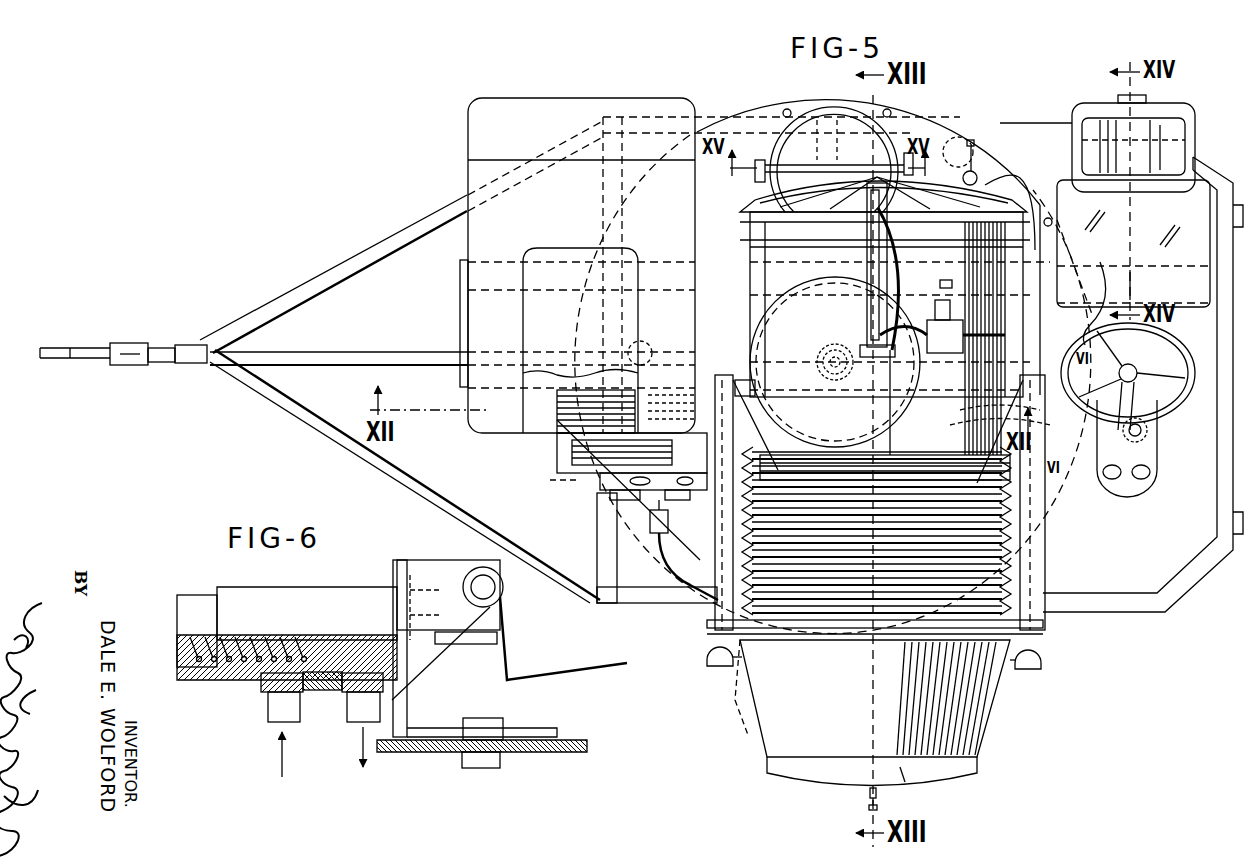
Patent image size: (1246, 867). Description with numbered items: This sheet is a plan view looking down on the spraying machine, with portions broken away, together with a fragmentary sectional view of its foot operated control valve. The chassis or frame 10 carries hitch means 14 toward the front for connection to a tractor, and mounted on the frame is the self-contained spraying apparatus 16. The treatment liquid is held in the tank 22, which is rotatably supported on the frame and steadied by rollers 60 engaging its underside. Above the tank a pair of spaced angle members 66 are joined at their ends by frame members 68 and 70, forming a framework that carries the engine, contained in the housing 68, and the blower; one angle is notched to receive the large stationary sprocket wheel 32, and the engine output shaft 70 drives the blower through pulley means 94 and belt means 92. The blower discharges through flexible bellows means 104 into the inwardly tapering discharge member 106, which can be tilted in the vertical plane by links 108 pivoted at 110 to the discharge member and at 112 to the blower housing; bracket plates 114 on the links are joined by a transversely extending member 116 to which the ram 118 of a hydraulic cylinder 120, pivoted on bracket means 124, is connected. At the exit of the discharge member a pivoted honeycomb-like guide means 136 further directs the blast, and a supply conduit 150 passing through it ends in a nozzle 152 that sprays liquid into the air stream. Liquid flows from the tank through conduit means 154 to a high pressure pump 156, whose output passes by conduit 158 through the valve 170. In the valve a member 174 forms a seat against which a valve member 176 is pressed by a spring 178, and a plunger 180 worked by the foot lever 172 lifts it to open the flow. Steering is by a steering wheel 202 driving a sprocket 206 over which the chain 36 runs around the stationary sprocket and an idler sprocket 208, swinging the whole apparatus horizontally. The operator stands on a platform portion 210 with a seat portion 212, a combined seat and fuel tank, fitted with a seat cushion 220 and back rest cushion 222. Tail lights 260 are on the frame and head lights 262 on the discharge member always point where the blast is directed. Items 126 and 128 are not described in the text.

In FIG. 5, the frame 10 is at (320, 280).
In FIG. 5, the hitch means 14 is at (148, 343).
In FIG. 5, the spraying apparatus 16 is at (1022, 195).
In FIG. 5, the tank 22 is at (930, 124).
In FIG. 5, the sprocket wheel 32 is at (760, 300).
In FIG. 5, the chain 36 is at (755, 340).
In FIG. 5, the rollers 60 is at (648, 345).
In FIG. 5, the angle members 66 is at (463, 275).
In FIG. 5, the housing 68 is at (465, 178).
In FIG. 5, the output shaft 70 is at (563, 388).
In FIG. 5, the belt means 92 is at (560, 420).
In FIG. 5, the pulley means 94 is at (560, 412).
In FIG. 5, the flexible bellows means 104 is at (1012, 580).
In FIG. 5, the discharge member 106 is at (990, 685).
In FIG. 5, the links 108 is at (720, 546).
In FIG. 5, the pivot 110 is at (707, 628).
In FIG. 5, the pivot 112 is at (745, 380).
In FIG. 5, the bracket plate 114 is at (1040, 458).
In FIG. 5, the transversely extending member 116 is at (1010, 495).
In FIG. 5, the ram 118 is at (875, 395).
In FIG. 5, the cylinder 120 is at (880, 230).
In FIG. 5, the bracket means 124 is at (865, 228).
In FIG. 5, the valve 126 is at (942, 342).
In FIG. 5, the fitting 128 is at (920, 300).
In FIG. 5, the honeycomb-like guide means 136 is at (900, 778).
In FIG. 5, the supply conduit 150 is at (868, 792).
In FIG. 6, the supply conduit 150 is at (352, 718).
In FIG. 5, the nozzle 152 is at (868, 807).
In FIG. 5, the conduit means 154 is at (680, 567).
In FIG. 5, the high pressure pump 156 is at (700, 500).
In FIG. 6, the conduit 158 is at (268, 714).
In FIG. 5, the valve 170 is at (1120, 500).
In FIG. 6, the valve 170 is at (360, 585).
In FIG. 6, the foot lever 172 is at (572, 670).
In FIG. 6, the valve seat member 174 is at (330, 682).
In FIG. 6, the valve member 176 is at (322, 638).
In FIG. 6, the spring 178 is at (282, 640).
In FIG. 6, the plunger 180 is at (375, 640).
In FIG. 5, the steering wheel 202 is at (1150, 330).
In FIG. 5, the sprocket 206 is at (1155, 450).
In FIG. 5, the idler sprocket 208 is at (975, 430).
In FIG. 5, the platform portion 210 is at (1099, 297).
In FIG. 5, the seat portion 212 is at (1185, 150).
In FIG. 5, the seat cushion 220 is at (1188, 257).
In FIG. 5, the back rest cushion 222 is at (1020, 203).
In FIG. 5, the tail lights 260 is at (1232, 215).
In FIG. 5, the head lights 262 is at (710, 668).